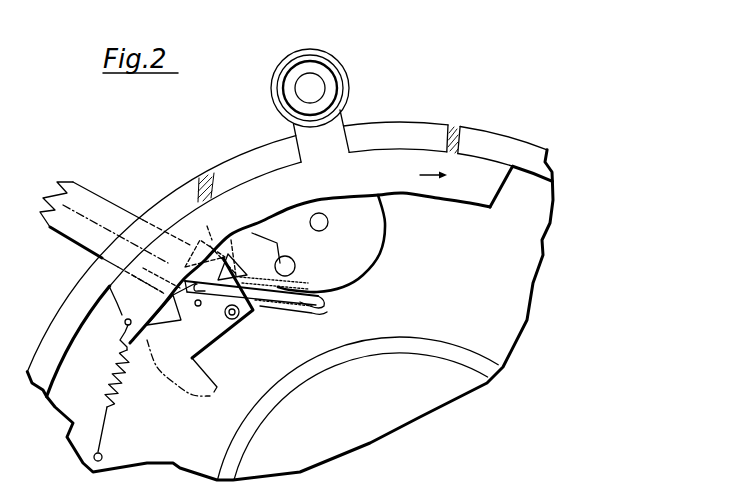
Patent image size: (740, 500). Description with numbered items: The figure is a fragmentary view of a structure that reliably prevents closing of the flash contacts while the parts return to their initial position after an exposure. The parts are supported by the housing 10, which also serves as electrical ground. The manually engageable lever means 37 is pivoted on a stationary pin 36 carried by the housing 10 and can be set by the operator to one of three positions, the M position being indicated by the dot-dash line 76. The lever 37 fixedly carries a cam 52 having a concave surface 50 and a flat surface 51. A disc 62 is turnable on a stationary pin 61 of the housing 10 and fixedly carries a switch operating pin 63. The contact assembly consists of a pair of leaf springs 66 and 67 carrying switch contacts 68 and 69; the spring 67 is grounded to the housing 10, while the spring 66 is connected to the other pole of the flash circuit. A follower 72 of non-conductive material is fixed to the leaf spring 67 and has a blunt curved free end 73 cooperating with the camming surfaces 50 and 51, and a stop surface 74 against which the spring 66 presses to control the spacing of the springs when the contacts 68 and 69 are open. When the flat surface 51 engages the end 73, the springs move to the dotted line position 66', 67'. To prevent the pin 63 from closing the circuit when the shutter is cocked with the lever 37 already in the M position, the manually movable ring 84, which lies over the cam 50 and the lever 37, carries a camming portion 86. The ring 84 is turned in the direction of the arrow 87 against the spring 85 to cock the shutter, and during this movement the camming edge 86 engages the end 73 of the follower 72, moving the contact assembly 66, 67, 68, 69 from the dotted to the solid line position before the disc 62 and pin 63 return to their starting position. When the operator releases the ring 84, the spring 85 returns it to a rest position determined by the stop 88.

The housing 10 is at (543, 255).
The stationary pin 36 is at (253, 313).
The manually engageable lever means 37 is at (87, 242).
The concave surface 50 is at (196, 250).
The flat surface 51 is at (217, 248).
The cam 52 is at (199, 226).
The stationary pin 61 is at (327, 227).
The disc 62 is at (385, 245).
The switch operating pin 63 is at (300, 263).
The leaf spring 66 is at (158, 273).
The dotted line position of leaf spring 66' is at (297, 274).
The leaf spring 67 is at (153, 316).
The dotted line position of leaf spring 67' is at (314, 296).
The switch contact 68 is at (307, 312).
The switch contact 69 is at (296, 309).
The follower member 72 is at (218, 290).
The blunt curved free end 73 is at (235, 257).
The stop surface 74 is at (234, 248).
The M position 76 is at (92, 213).
The manually movable element (ring) 84 is at (500, 190).
The spring 85 is at (117, 397).
The camming portion 86 is at (263, 223).
The arrow 87 is at (428, 175).
The stop 88 is at (199, 200).